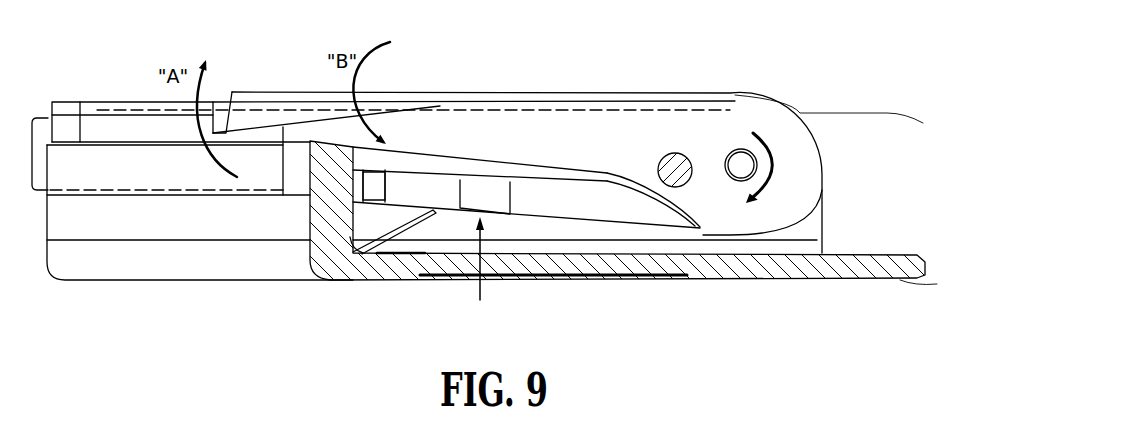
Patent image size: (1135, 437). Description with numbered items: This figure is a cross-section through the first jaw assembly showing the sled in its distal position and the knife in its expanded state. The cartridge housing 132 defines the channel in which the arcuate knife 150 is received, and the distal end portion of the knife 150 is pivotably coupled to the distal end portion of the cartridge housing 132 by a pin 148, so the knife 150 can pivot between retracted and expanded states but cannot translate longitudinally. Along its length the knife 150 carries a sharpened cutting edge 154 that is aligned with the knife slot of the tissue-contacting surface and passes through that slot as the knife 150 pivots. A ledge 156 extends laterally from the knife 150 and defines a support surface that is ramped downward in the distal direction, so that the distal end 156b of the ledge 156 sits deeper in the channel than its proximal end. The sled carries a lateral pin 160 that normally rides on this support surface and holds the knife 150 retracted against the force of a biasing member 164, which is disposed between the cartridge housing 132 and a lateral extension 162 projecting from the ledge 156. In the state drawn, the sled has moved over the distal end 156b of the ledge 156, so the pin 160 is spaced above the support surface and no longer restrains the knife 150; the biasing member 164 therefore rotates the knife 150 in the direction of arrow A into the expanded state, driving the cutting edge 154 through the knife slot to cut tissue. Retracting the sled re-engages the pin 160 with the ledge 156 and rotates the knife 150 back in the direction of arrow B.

The cartridge housing 132 is at (108, 258).
The pin 148 is at (740, 167).
The knife 150 is at (478, 275).
The cutting edge 154 is at (435, 92).
The ledge 156 is at (585, 132).
The distal end of ledge 156b is at (627, 167).
The pin 160 is at (678, 172).
The lateral extension 162 is at (373, 195).
The biasing member 164 is at (398, 237).